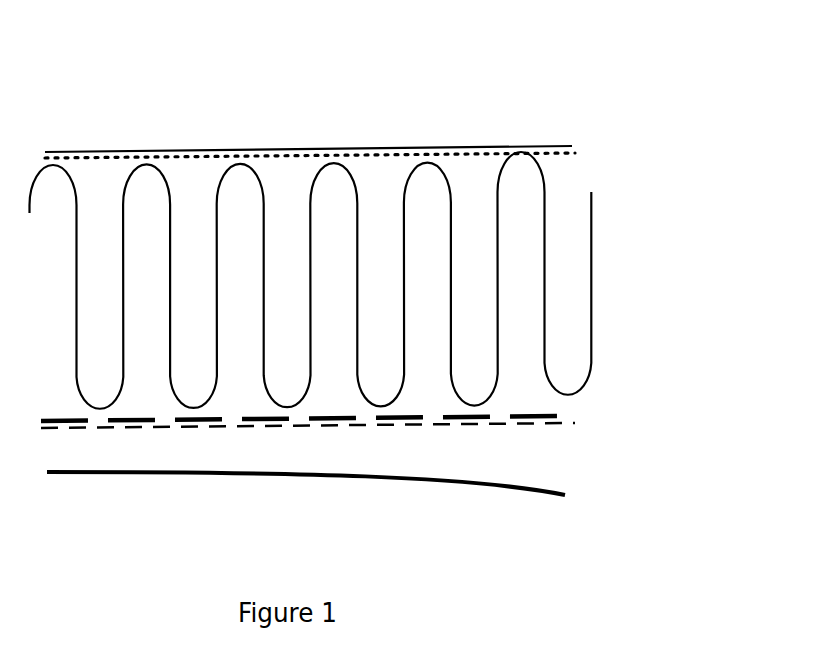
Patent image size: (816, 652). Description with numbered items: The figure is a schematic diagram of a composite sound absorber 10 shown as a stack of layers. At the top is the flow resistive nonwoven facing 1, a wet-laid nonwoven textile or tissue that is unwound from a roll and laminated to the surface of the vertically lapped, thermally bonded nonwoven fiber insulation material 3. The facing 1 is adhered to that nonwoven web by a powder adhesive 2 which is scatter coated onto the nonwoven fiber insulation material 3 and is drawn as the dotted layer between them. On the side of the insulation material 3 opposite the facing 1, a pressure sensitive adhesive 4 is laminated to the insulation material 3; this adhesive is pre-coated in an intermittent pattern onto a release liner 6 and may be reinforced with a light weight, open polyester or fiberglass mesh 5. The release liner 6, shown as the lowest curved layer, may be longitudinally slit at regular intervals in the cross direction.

The composite sound absorber 10 is at (97, 126).
The flow resistive nonwoven facing 1 is at (478, 132).
The powder adhesive 2 is at (582, 146).
The nonwoven fiber insulation material 3 is at (630, 208).
The pressure sensitive adhesive 4 is at (542, 402).
The polyester or fiberglass mesh 5 is at (586, 417).
The release liner 6 is at (573, 460).